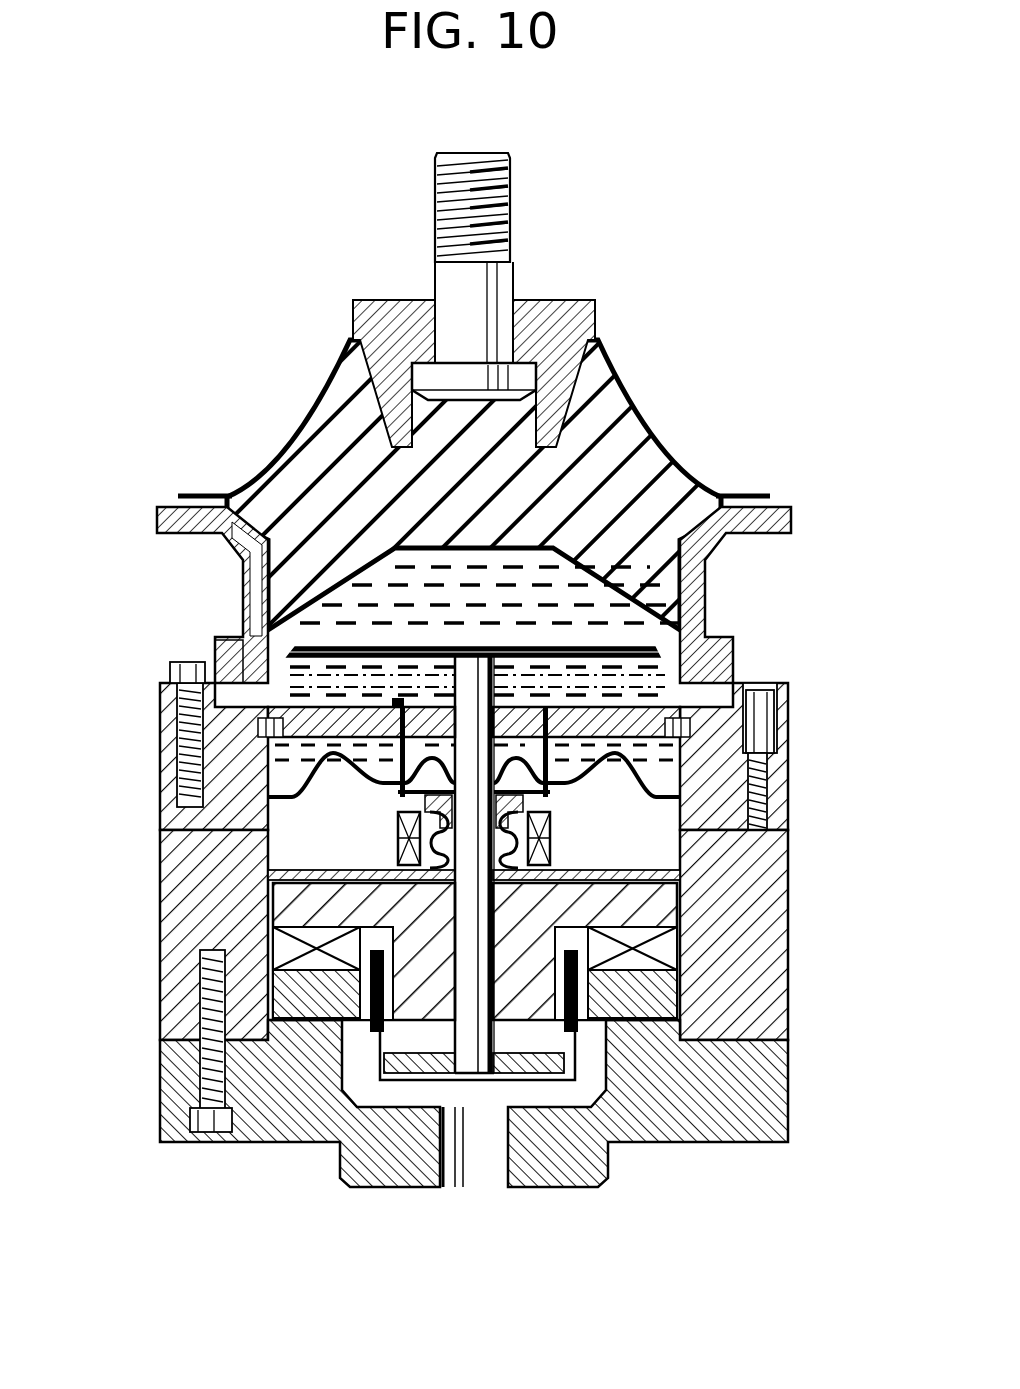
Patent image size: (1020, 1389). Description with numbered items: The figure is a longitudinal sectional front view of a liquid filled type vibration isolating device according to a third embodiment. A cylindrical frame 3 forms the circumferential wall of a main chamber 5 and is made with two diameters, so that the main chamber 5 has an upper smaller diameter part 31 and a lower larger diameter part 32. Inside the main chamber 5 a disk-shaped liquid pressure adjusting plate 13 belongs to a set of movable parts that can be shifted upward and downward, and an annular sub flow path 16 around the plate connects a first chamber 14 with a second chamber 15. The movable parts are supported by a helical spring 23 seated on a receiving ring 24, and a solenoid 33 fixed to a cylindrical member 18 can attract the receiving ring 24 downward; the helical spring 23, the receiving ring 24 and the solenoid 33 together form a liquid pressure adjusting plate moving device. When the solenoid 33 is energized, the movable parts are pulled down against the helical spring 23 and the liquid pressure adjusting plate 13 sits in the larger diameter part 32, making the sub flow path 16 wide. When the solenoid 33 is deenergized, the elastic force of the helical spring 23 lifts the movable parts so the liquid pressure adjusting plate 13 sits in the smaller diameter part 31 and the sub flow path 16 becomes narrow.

The cylindrical frame 3 is at (215, 638).
The main chamber 5 is at (382, 613).
The liquid pressure adjusting plate 13 is at (600, 672).
The first chamber 14 is at (413, 570).
The second chamber 15 is at (380, 693).
The sub flow path 16 is at (663, 650).
The cylindrical member 18 is at (160, 878).
The helical spring 23 is at (670, 868).
The receiving ring 24 is at (548, 808).
The smaller diameter part 31 is at (260, 598).
The larger diameter part 32 is at (210, 680).
The solenoid 33 is at (552, 843).